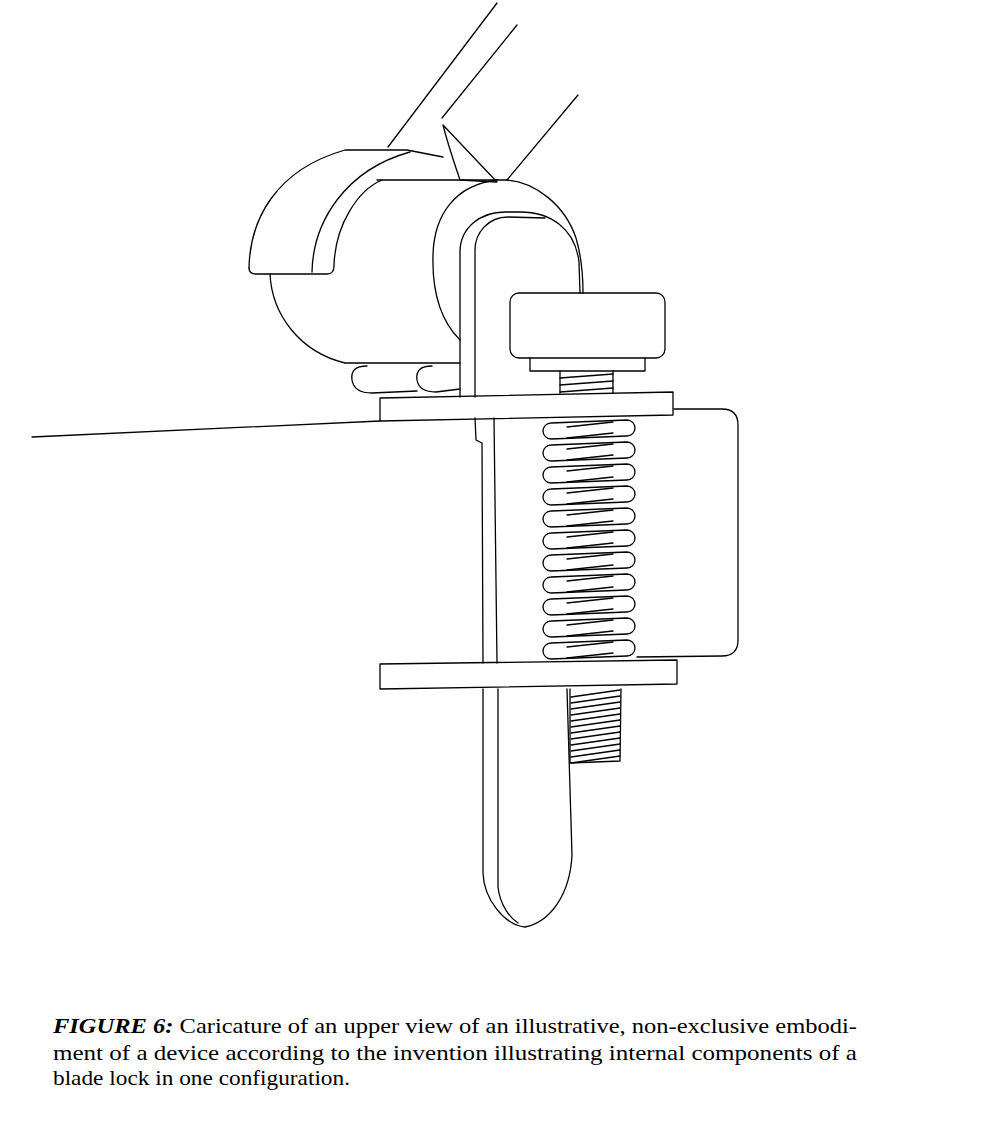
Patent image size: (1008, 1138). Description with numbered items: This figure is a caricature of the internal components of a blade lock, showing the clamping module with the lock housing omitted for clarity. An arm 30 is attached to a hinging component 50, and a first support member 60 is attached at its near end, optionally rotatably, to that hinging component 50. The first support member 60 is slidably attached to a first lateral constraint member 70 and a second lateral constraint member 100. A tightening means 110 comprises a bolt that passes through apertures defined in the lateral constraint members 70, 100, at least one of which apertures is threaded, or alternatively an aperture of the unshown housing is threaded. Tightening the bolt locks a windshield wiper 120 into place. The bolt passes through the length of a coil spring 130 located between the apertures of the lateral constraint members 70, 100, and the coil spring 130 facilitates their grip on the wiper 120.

The arm 30 is at (423, 120).
The hinging component 50 is at (305, 321).
The first support member 60 is at (545, 247).
The first lateral constraint member 70 is at (398, 412).
The second lateral constraint member 100 is at (410, 680).
The tightening means 110 is at (607, 312).
The windshield wiper 120 is at (165, 425).
The coil spring 130 is at (626, 469).